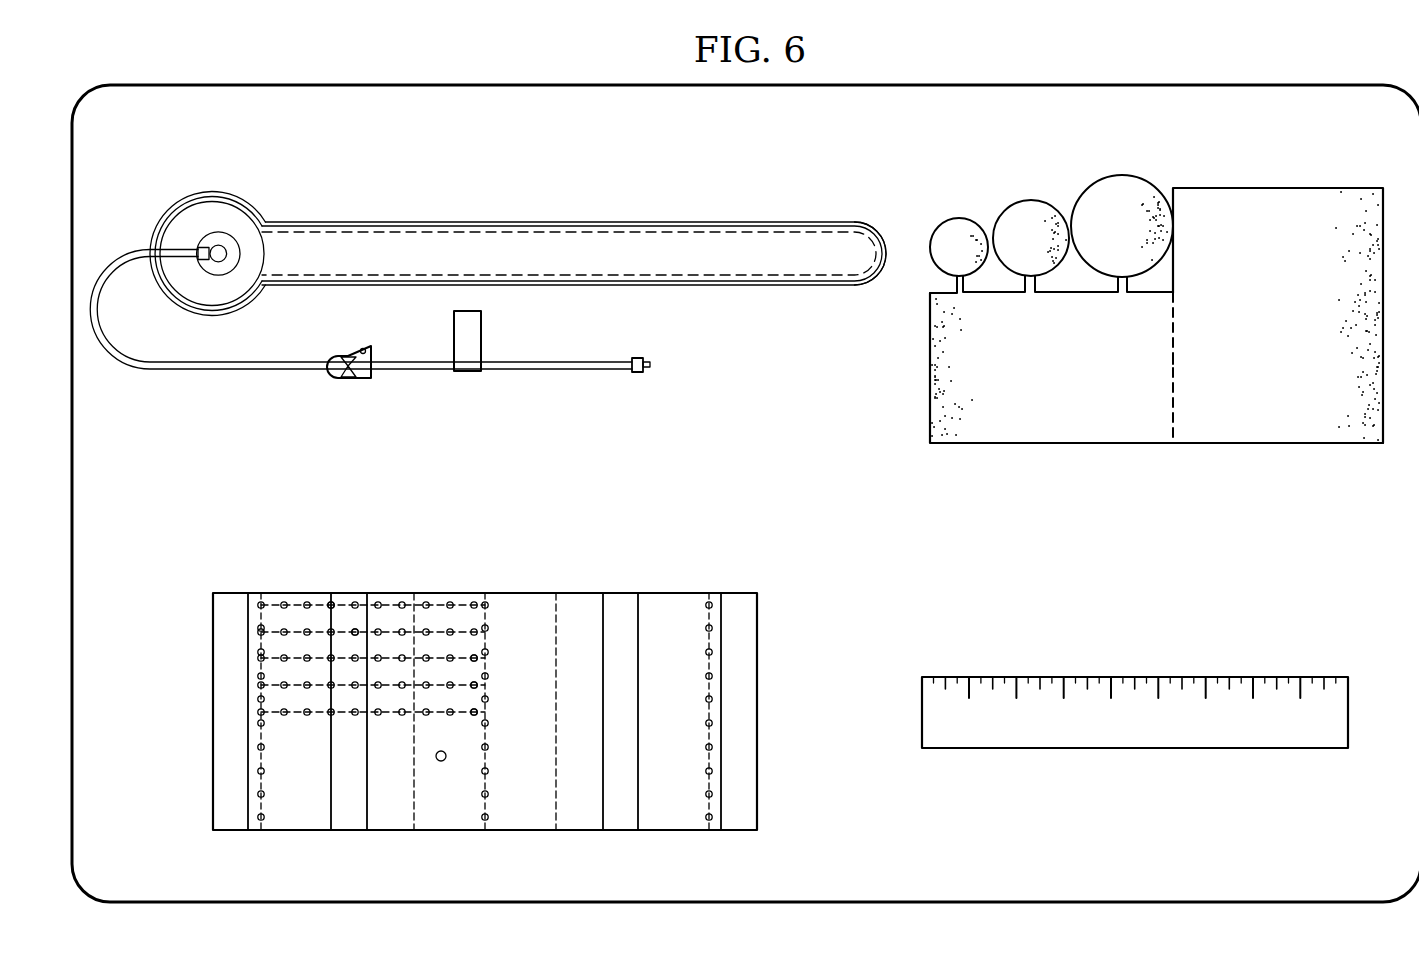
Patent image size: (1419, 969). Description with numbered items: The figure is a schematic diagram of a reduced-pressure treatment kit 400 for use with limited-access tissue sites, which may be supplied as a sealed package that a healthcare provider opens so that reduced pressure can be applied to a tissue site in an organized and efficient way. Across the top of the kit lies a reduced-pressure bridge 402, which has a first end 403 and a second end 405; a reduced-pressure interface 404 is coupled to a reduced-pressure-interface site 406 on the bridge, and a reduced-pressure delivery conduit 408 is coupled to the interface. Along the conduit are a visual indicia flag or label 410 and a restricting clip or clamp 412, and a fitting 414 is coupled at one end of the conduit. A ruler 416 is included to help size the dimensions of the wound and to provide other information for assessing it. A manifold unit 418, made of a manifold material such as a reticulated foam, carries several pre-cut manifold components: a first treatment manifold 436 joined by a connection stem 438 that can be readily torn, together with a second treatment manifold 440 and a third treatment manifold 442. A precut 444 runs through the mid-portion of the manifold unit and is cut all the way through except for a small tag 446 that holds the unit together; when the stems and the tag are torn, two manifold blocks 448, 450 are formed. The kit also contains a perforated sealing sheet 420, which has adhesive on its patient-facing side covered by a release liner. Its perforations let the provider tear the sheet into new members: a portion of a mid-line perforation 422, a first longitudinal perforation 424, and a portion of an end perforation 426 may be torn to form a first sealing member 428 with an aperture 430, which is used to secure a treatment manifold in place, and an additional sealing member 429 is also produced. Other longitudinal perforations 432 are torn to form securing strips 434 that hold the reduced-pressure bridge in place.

The reduced-pressure treatment kit 400 is at (506, 80).
The reduced-pressure bridge 402 is at (458, 217).
The first end 403 is at (830, 232).
The reduced-pressure interface 404 is at (207, 234).
The second end 405 is at (221, 192).
The reduced-pressure-interface site 406 is at (245, 219).
The reduced-pressure delivery conduit 408 is at (210, 371).
The visual indicia flag or label 410 is at (465, 373).
The restricting clip or clamp 412 is at (348, 381).
The fitting 414 is at (636, 374).
The ruler 416 is at (1137, 750).
The manifold unit 418 is at (1283, 182).
The perforated sealing sheet 420 is at (213, 783).
The mid-line perforation 422 is at (488, 789).
The first longitudinal perforation 424 is at (347, 652).
The end perforation 426 is at (264, 795).
The first sealing member 428 is at (470, 808).
The additional sealing member 429 is at (675, 605).
The aperture 430 is at (441, 762).
The longitudinal perforations 432 is at (348, 632).
The securing strips 434 is at (295, 612).
The first treatment manifold 436 is at (960, 218).
The connection stem 438 is at (953, 280).
The second treatment manifold 440 is at (1035, 200).
The third treatment manifold 442 is at (1130, 175).
The precut 444 is at (1178, 322).
The tag 446 is at (1175, 364).
The manifold block 448 is at (1057, 433).
The manifold block 450 is at (1276, 436).